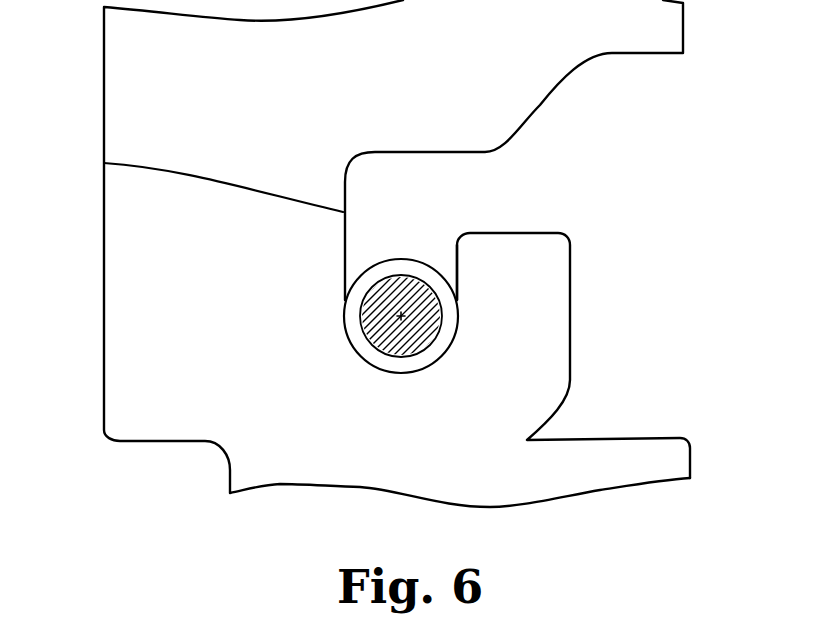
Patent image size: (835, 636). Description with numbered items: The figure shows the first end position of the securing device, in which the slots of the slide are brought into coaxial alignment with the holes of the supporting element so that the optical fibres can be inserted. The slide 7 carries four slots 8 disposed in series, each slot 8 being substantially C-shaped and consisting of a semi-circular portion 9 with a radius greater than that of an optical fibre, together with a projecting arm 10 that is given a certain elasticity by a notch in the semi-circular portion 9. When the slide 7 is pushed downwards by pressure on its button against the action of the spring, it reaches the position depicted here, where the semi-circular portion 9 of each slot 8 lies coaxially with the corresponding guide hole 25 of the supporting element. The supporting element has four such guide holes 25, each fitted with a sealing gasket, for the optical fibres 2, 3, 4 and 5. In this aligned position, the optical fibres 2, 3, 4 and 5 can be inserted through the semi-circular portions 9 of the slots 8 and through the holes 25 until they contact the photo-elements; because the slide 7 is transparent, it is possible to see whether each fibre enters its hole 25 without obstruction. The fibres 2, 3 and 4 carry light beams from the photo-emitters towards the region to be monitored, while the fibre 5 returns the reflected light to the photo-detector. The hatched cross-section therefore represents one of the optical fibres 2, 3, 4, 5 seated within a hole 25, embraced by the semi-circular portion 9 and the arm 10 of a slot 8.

The slide 7 is at (104, 65).
The slot 8 is at (104, 163).
The semi-circular portion 9 is at (365, 360).
The projecting arm 10 is at (553, 265).
The guide hole 25 is at (407, 258).
The optical fibre 2 is at (493, 316).
The optical fibre 3 is at (493, 316).
The optical fibre 4 is at (493, 316).
The optical fibre 5 is at (440, 305).